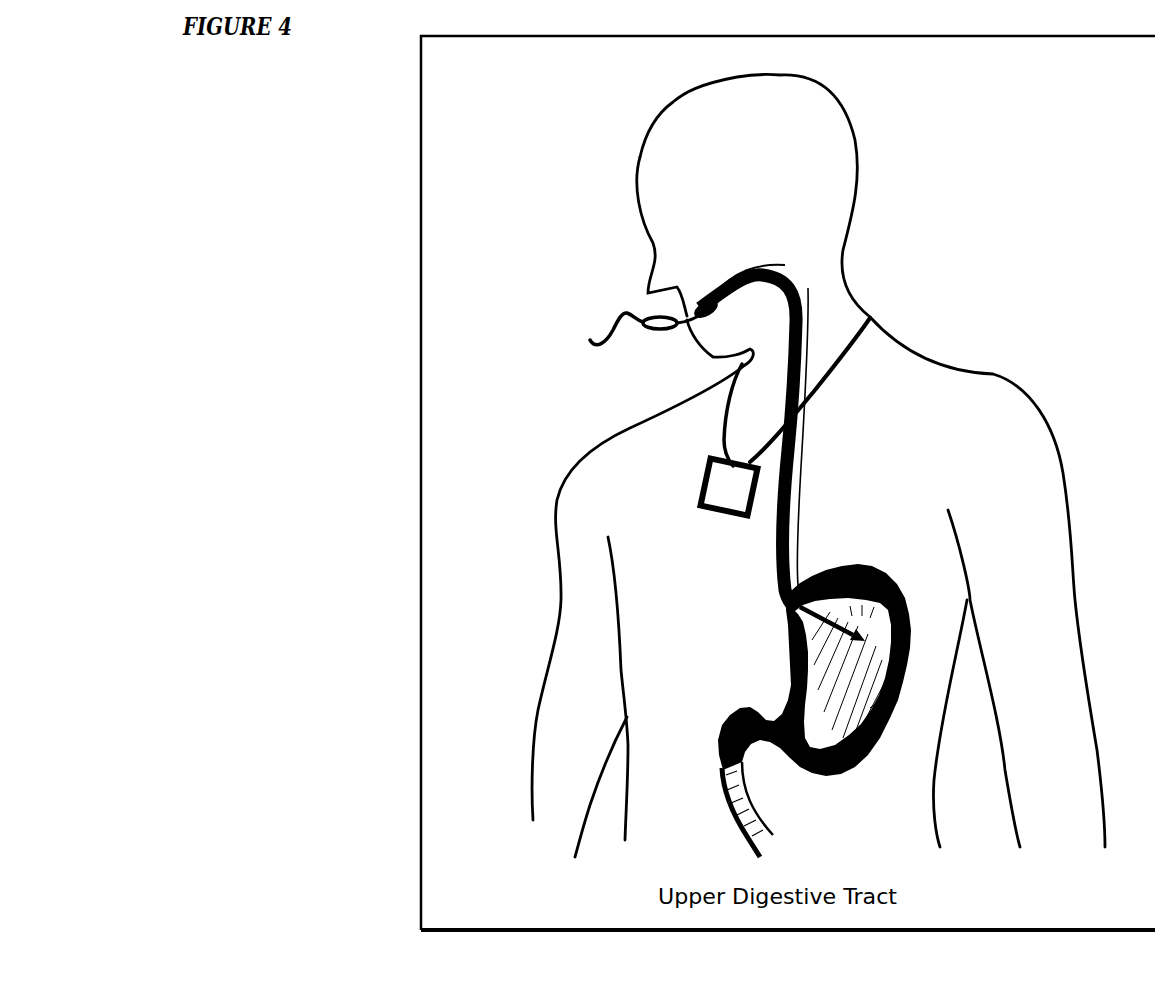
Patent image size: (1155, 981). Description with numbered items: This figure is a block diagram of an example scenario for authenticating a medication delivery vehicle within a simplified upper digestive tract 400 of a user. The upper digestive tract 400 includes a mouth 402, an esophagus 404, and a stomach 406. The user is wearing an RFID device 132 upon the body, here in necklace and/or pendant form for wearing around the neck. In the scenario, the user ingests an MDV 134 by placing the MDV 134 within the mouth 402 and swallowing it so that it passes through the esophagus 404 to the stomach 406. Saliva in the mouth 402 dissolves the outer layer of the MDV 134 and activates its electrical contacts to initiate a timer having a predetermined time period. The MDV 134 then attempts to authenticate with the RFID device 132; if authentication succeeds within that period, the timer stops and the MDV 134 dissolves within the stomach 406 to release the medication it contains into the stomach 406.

The upper digestive tract 400 is at (463, 61).
The mouth 402 is at (708, 306).
The esophagus 404 is at (803, 417).
The stomach 406 is at (851, 650).
The medication delivery vehicle (MDV) 134 is at (603, 332).
The RFID device 132 is at (706, 470).